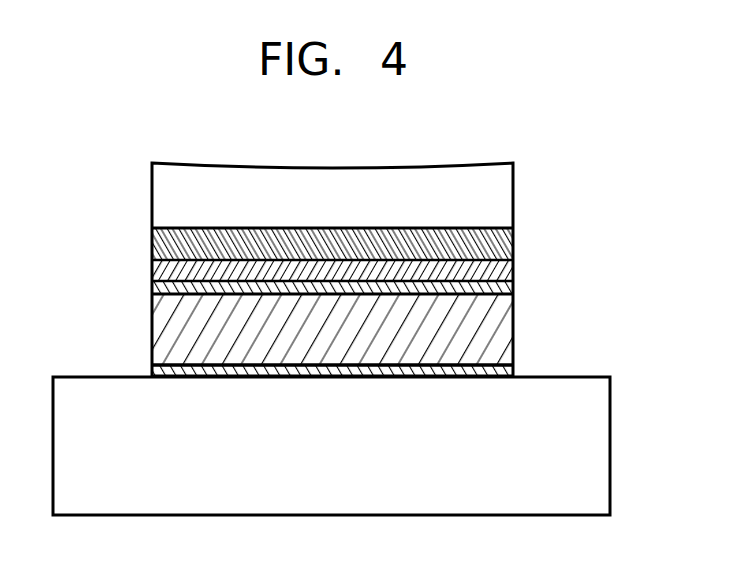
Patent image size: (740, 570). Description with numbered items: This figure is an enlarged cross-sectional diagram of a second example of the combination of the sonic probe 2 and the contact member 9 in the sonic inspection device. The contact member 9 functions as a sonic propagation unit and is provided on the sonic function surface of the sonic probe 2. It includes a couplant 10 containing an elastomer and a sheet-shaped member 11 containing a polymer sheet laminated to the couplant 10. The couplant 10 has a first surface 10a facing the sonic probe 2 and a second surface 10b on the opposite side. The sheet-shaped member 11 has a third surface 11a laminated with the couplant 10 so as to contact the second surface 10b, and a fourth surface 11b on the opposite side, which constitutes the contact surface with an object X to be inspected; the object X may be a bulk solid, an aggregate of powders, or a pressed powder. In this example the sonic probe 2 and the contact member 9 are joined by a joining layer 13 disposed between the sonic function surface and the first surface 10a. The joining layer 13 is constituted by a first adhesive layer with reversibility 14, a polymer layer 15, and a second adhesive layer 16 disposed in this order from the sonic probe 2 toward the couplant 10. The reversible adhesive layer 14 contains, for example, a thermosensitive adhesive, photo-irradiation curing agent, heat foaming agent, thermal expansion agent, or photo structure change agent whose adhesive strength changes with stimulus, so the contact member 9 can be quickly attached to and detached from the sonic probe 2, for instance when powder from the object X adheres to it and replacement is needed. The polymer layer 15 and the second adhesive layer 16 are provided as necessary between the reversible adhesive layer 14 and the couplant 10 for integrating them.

The sonic probe 2 is at (152, 201).
The joining layer 13 is at (275, 265).
The first adhesive layer with reversibility 14 is at (152, 241).
The polymer layer 15 is at (152, 270).
The second adhesive layer 16 is at (300, 291).
The contact member 9 is at (360, 349).
The couplant 10 is at (366, 319).
The first surface 10a is at (513, 297).
The second surface 10b is at (505, 356).
The sheet-shaped member 11 is at (335, 372).
The third surface 11a is at (173, 368).
The fourth surface 11b is at (170, 376).
The object to be inspected X is at (610, 436).